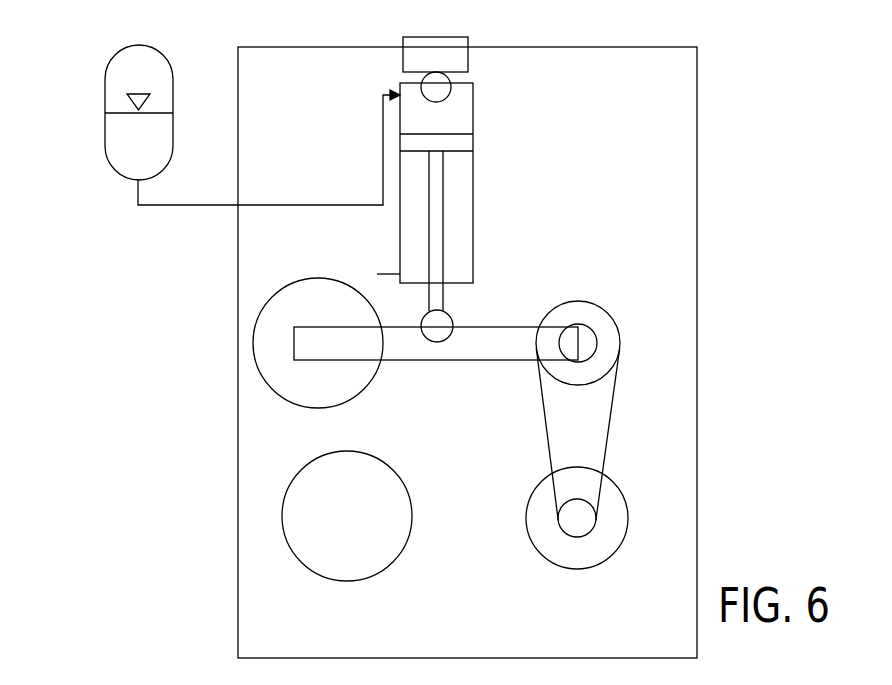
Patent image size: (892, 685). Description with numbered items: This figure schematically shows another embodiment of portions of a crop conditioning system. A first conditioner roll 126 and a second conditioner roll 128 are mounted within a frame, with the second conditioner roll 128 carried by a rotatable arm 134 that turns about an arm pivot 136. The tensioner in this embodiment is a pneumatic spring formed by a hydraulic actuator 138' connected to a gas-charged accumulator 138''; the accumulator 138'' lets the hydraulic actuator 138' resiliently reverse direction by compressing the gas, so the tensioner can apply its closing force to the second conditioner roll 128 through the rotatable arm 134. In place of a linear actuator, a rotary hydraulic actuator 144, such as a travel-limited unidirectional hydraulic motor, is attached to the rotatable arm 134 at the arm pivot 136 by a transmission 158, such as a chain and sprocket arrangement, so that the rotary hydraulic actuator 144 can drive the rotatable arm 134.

The first conditioner roll 126 is at (300, 470).
The second conditioner roll 128 is at (270, 293).
The rotatable arm 134 is at (513, 325).
The arm pivot 136 is at (591, 330).
The hydraulic actuator 138' is at (477, 174).
The gas-charged accumulator 138'' is at (221, 112).
The rotary hydraulic actuator 144 is at (628, 515).
The transmission 158 is at (610, 435).